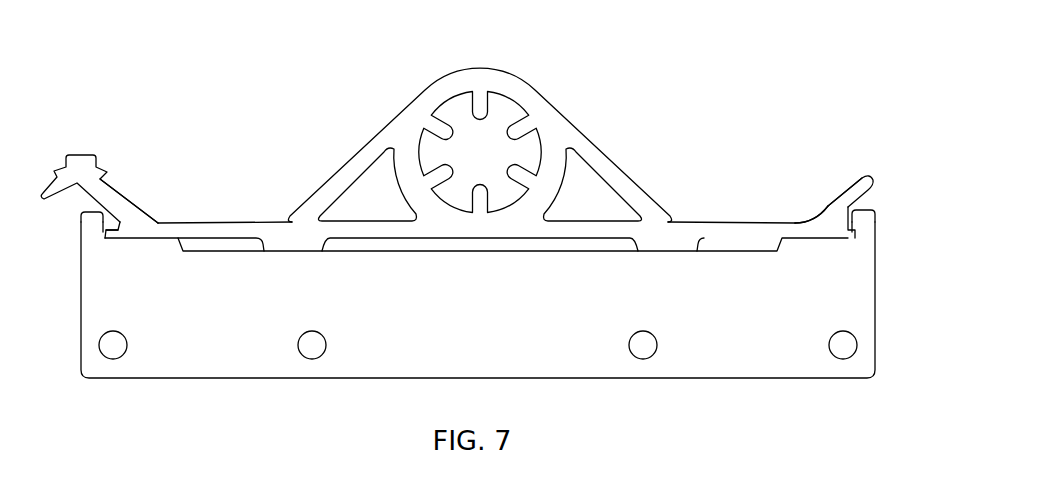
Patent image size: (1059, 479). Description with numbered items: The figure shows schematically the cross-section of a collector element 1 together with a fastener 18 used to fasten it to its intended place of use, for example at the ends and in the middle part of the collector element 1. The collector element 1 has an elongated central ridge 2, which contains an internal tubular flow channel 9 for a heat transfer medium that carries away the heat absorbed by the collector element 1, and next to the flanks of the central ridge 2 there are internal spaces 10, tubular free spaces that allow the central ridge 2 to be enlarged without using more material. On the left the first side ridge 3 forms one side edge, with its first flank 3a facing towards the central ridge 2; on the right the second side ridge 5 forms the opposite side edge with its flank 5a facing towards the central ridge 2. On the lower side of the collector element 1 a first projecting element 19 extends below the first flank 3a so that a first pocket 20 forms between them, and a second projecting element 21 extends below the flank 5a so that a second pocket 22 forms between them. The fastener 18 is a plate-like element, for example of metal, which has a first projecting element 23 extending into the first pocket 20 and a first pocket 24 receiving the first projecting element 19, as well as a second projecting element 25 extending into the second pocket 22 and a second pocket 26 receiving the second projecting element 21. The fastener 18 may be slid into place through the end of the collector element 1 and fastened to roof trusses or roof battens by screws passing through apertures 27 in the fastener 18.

The collector element 1 is at (638, 60).
The central ridge 2 is at (497, 82).
The first side ridge 3 is at (116, 128).
The first flank 3a is at (112, 196).
The second side ridge 5 is at (838, 165).
The flank 5a is at (848, 200).
The internal tubular flow channel 9 is at (471, 166).
The internal spaces 10 is at (378, 202).
The fastener 18 is at (483, 349).
The first projecting element 19 is at (118, 232).
The first pocket 20 is at (118, 220).
The second projecting element 21 is at (833, 230).
The second pocket 22 is at (832, 217).
The first projecting element 23 is at (102, 219).
The first pocket 24 is at (103, 230).
The second projecting element 25 is at (868, 212).
The second pocket 26 is at (853, 230).
The apertures 27 is at (113, 350).